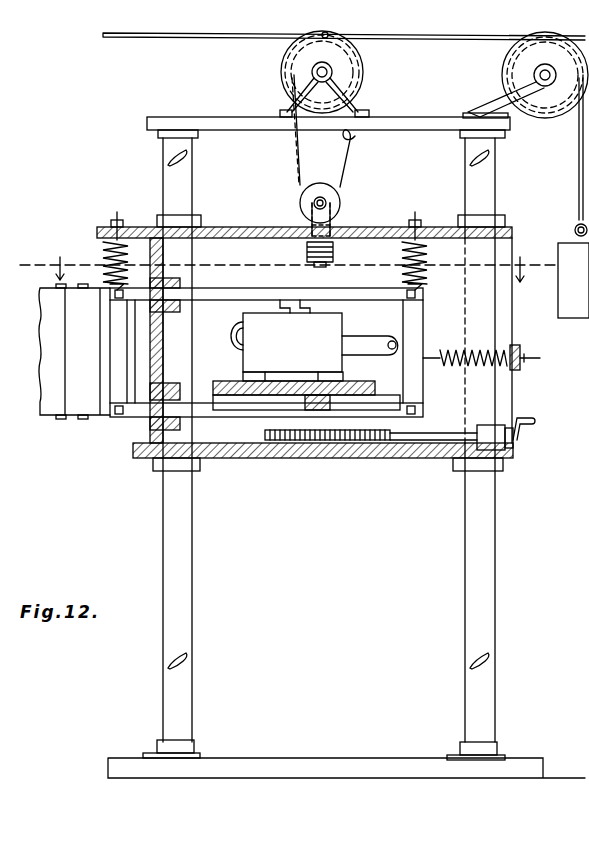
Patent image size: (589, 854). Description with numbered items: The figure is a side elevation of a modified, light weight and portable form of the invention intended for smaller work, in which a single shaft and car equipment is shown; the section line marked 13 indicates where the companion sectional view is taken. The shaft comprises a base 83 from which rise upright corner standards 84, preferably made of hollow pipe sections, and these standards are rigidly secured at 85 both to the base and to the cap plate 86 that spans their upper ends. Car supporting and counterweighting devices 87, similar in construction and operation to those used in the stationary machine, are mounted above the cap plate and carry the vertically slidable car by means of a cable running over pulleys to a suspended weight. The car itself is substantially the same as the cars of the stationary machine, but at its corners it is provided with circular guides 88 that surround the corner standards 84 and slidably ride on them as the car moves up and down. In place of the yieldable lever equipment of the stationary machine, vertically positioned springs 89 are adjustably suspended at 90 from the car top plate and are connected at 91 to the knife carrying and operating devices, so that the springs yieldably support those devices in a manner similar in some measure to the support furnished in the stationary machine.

The base 83 is at (338, 750).
The upright corner standards 84 is at (490, 172).
The securing points 85 is at (160, 140).
The cap plate 86 is at (446, 122).
The car supporting and counterweighting devices 87 is at (282, 60).
The circular guides 88 is at (200, 220).
The springs 89 is at (104, 260).
The adjustable suspension points 90 is at (113, 216).
The connection points 91 is at (113, 297).
The section line 13- 13 is at (290, 272).